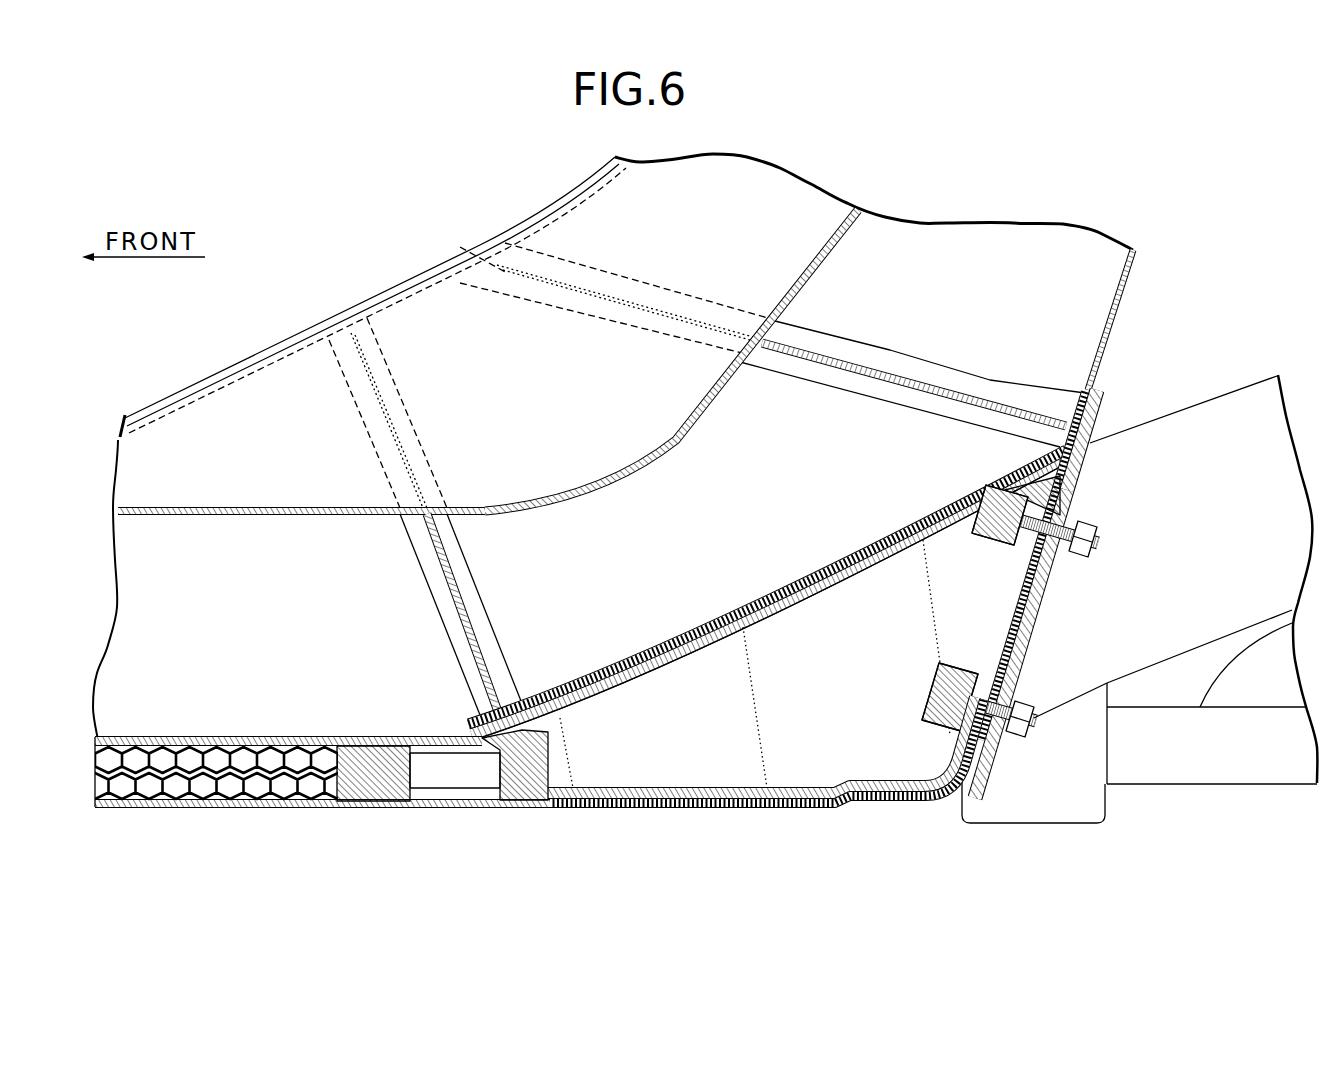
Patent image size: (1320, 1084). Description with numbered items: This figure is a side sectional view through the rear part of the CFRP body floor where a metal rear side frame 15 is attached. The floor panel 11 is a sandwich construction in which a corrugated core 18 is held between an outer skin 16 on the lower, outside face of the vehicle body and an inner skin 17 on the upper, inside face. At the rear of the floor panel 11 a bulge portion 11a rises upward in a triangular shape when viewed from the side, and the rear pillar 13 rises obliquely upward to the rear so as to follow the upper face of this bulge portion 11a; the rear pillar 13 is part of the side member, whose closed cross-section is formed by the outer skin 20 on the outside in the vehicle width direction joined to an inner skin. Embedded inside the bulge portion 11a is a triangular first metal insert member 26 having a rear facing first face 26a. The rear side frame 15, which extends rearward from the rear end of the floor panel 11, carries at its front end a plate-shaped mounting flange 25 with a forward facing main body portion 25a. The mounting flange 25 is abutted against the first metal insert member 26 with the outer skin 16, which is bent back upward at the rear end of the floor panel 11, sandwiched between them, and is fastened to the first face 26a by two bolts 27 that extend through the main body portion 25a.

The floor panel 11 is at (274, 818).
The bulge portion 11a is at (855, 553).
The rear pillar 13 is at (426, 261).
The rear side frame 15 is at (1197, 420).
The outer skin 16 is at (616, 808).
The inner skin 17 is at (630, 660).
The corrugated core 18 is at (186, 795).
The outer skin 20 is at (318, 507).
The mounting flange 25 is at (1060, 600).
The main body portion 25a is at (1098, 470).
The first metal insert member 26 is at (768, 594).
The first face 26a is at (1032, 640).
The bolt 27 is at (1098, 542).